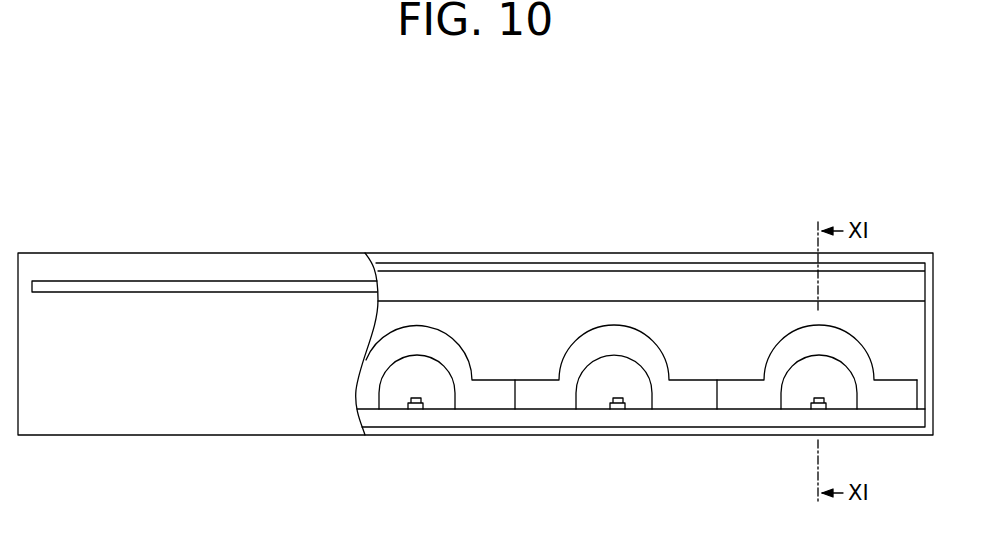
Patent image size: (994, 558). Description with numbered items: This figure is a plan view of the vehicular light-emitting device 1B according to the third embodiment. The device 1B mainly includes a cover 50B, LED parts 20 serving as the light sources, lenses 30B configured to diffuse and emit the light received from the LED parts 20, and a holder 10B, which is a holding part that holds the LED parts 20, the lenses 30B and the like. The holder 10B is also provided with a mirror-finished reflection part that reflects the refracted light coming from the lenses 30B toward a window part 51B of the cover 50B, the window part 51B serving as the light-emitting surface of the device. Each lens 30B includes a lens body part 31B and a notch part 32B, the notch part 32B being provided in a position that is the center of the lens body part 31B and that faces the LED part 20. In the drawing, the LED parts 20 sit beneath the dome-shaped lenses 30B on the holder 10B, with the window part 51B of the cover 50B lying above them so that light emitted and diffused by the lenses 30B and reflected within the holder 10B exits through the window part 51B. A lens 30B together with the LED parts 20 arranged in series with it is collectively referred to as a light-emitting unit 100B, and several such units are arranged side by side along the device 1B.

The vehicular light-emitting device 1B is at (140, 160).
The cover 50B is at (202, 268).
The window part 51B is at (114, 287).
The holder 10B is at (538, 337).
The light-emitting unit 100B is at (641, 428).
The LED part 20 is at (417, 410).
The lens 30B is at (641, 428).
The lens body part 31B is at (670, 393).
The notch part 32B is at (730, 480).